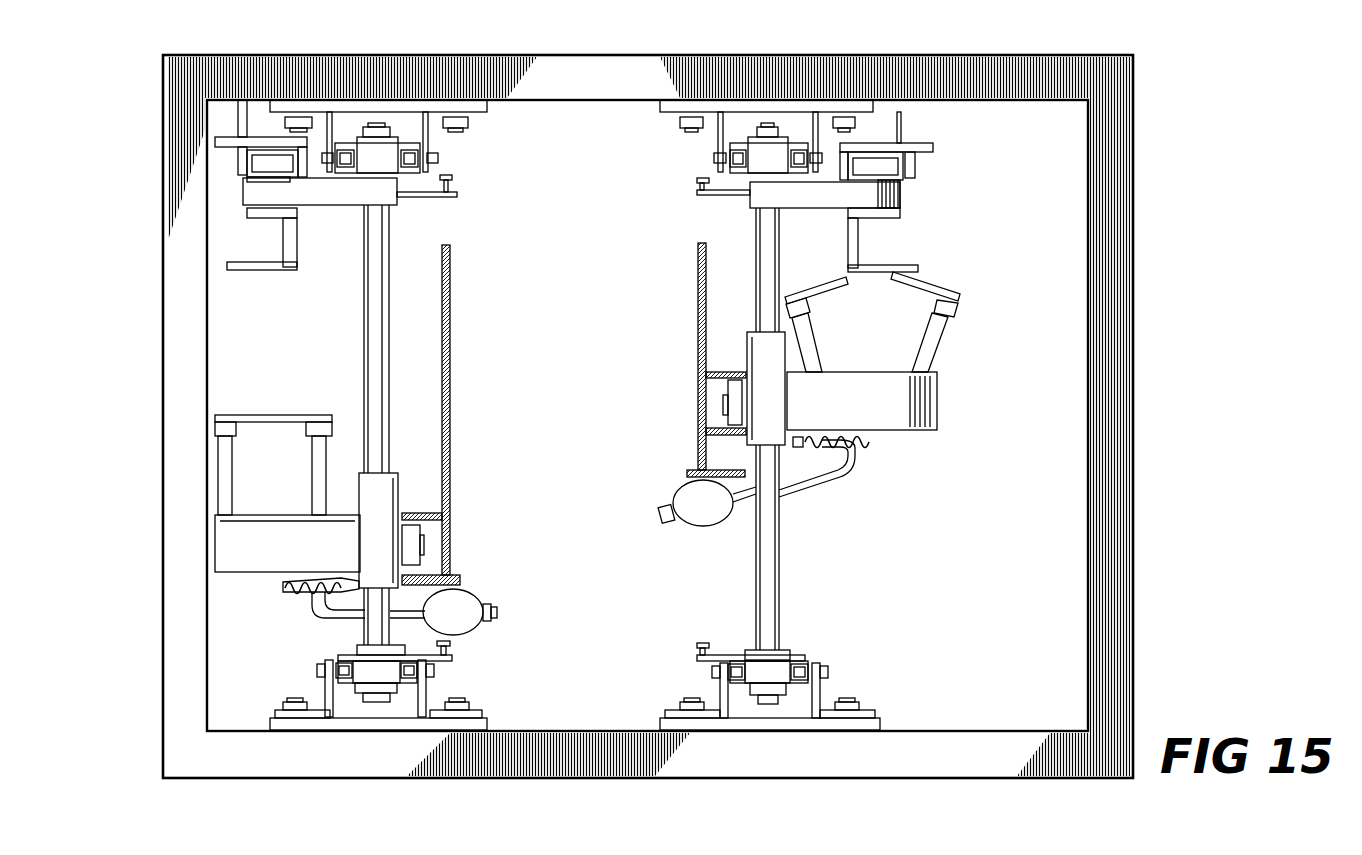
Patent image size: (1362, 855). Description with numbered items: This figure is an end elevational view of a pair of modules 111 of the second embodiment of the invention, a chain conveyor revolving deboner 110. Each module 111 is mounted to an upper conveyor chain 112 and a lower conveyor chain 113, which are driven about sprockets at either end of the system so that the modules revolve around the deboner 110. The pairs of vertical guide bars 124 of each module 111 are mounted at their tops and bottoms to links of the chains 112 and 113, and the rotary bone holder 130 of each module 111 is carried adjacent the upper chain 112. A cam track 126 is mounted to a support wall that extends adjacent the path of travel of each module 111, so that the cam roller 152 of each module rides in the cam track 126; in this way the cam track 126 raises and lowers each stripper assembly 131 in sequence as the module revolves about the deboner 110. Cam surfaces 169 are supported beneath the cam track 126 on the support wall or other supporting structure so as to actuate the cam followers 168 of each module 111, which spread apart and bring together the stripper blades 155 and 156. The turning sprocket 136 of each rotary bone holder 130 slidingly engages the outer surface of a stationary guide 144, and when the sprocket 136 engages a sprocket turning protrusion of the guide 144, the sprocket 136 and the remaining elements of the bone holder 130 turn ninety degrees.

The chain conveyor revolving deboner 110 is at (1165, 103).
The module 111 is at (500, 243).
The upper conveyor chain 112 is at (455, 190).
The lower conveyor chain 113 is at (445, 661).
The vertical guide bars 124 is at (366, 305).
The cam track 126 is at (429, 513).
The rotary bone holder 130 is at (275, 250).
The stripper assembly 131 is at (232, 590).
The turning sprocket 136 is at (268, 165).
The stationary guide 144 is at (245, 152).
The cam roller 152 is at (440, 530).
The stripper blade 155 is at (330, 414).
The stripper blade 156 is at (258, 414).
The cam follower 168 is at (470, 628).
The cam surfaces 169 is at (462, 587).